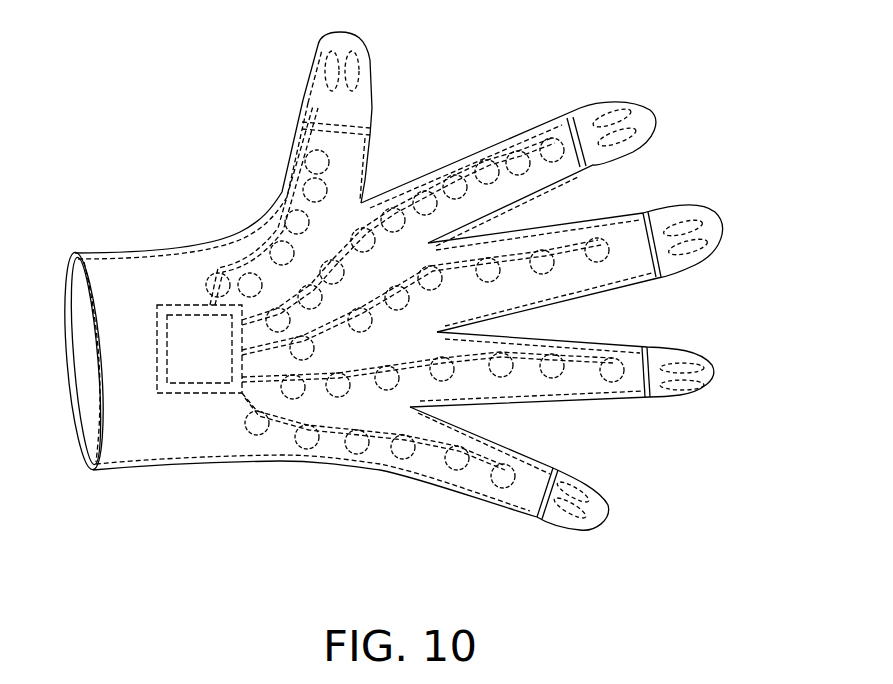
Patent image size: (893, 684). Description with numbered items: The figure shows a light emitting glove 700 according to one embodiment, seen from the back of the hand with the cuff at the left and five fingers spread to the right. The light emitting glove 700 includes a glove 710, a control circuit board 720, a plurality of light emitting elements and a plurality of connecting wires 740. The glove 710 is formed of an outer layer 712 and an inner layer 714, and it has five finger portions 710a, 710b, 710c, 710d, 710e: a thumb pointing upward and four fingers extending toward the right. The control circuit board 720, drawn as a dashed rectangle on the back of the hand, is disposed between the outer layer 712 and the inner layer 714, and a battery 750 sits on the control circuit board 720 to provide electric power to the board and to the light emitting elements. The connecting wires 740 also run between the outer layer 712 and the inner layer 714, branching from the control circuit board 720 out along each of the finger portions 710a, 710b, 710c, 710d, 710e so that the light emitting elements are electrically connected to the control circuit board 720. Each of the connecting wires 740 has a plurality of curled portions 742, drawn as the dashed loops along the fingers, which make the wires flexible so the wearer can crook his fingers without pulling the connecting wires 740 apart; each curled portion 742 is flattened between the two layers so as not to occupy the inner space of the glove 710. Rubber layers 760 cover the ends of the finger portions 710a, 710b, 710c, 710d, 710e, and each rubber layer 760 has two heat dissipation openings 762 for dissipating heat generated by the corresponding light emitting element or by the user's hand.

The light emitting glove 700 is at (77, 586).
The glove 710 is at (420, 306).
The finger portion 710a is at (339, 116).
The finger portion 710b is at (615, 84).
The finger portion 710c is at (673, 198).
The finger portion 710d is at (680, 338).
The finger portion 710e is at (610, 534).
The outer layer 712 is at (163, 250).
The inner layer 714 is at (215, 242).
The control circuit board 720 is at (177, 424).
The connecting wires 740 is at (590, 388).
The curled portions 742 is at (628, 383).
The battery 750 is at (200, 368).
The rubber layers 760 is at (294, 82).
The heat dissipation opening 762 is at (320, 37).